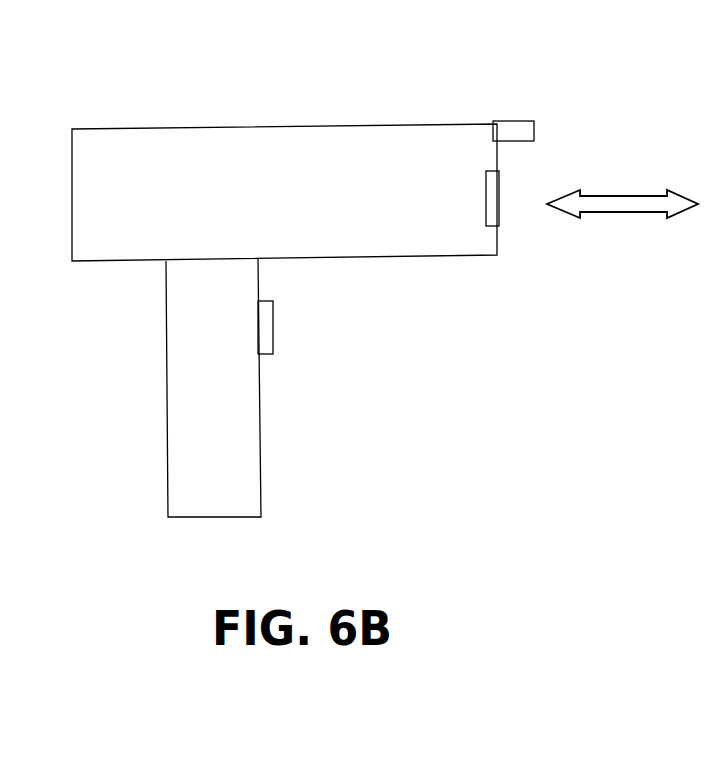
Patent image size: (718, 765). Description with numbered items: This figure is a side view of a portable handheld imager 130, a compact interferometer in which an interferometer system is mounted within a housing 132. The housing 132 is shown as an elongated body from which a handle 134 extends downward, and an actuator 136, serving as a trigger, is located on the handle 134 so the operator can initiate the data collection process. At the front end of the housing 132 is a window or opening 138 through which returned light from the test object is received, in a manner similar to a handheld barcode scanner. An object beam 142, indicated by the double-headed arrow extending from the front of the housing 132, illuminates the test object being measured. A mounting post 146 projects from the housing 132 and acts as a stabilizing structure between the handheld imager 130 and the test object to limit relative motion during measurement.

The portable handheld imager 130 is at (184, 101).
The housing 132 is at (287, 211).
The handle 134 is at (183, 406).
The actuator 136 is at (272, 331).
The window or opening 138 is at (500, 215).
The object beam 142 is at (638, 197).
The mounting post 146 is at (522, 121).